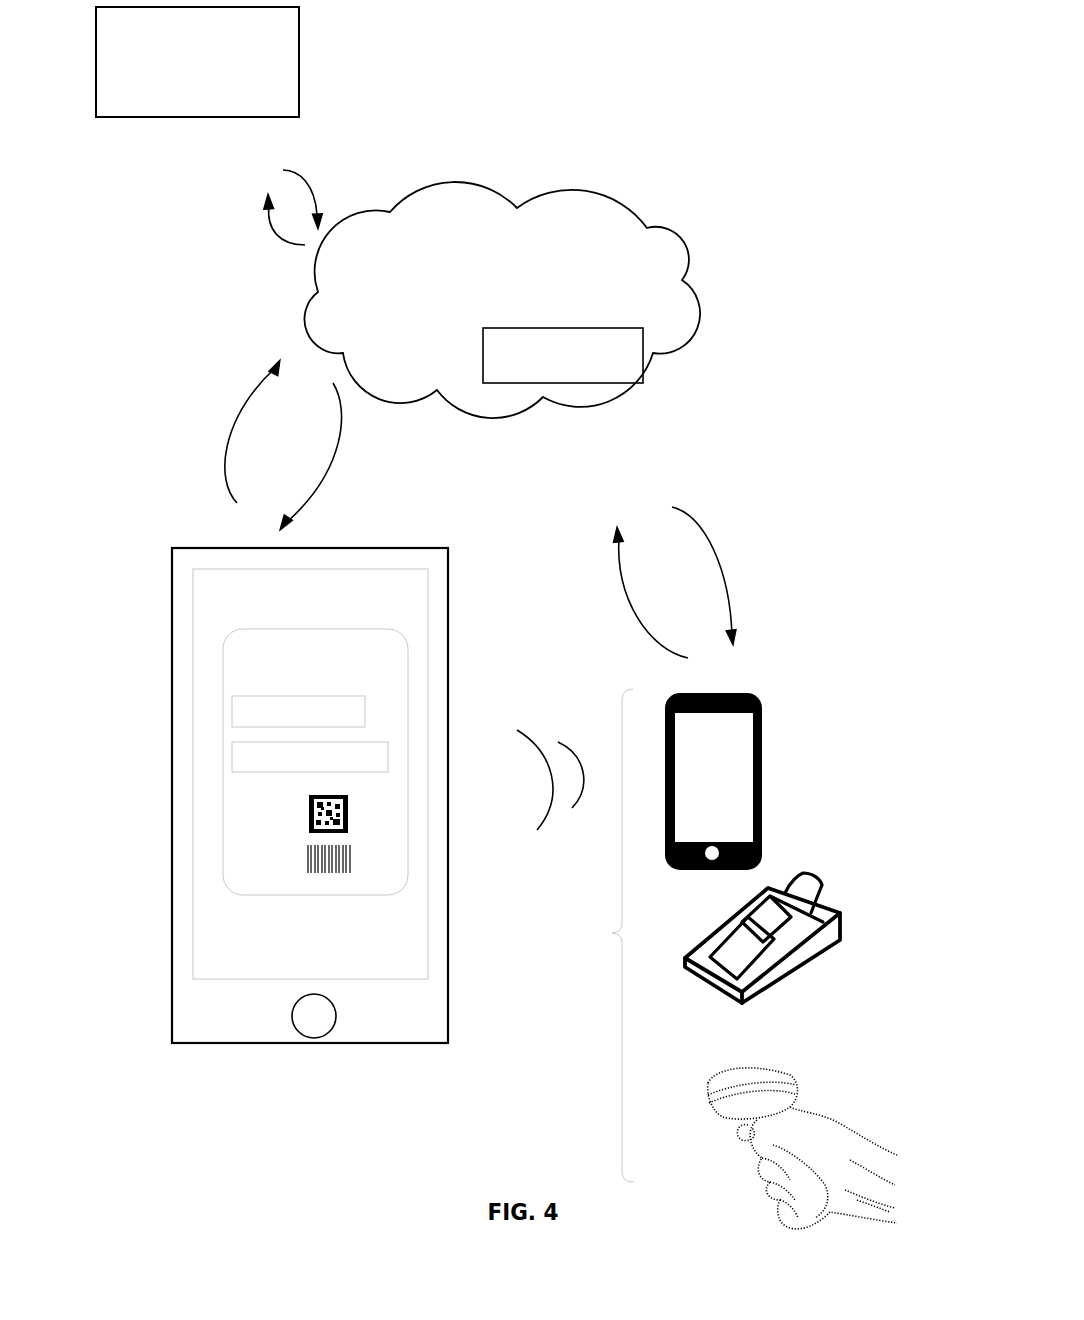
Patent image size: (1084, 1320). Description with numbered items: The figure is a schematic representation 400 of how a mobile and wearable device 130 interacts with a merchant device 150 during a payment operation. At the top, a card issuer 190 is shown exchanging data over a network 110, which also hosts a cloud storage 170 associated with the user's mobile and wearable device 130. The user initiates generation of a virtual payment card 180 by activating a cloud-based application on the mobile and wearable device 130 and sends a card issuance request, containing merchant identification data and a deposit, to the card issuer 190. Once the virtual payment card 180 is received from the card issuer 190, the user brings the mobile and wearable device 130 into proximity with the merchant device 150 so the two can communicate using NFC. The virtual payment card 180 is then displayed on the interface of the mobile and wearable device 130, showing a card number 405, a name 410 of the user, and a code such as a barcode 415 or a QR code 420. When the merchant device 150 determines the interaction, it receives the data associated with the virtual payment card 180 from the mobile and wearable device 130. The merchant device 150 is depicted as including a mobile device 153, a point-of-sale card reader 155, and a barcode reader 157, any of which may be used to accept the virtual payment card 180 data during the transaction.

The schematic representation 400 is at (873, 212).
The card issuer 190 is at (178, 86).
The network 110 is at (481, 313).
The cloud storage 170 is at (643, 353).
The mobile and wearable device 130 is at (448, 1000).
The virtual payment card 180 is at (408, 757).
The card number 405 is at (365, 712).
The name 410 is at (232, 755).
The QR code 420 is at (348, 805).
The barcode 415 is at (333, 862).
The merchant device 150 is at (605, 933).
The mobile device 153 is at (762, 793).
The point-of-sale card reader 155 is at (827, 957).
The barcode reader 157 is at (737, 1070).